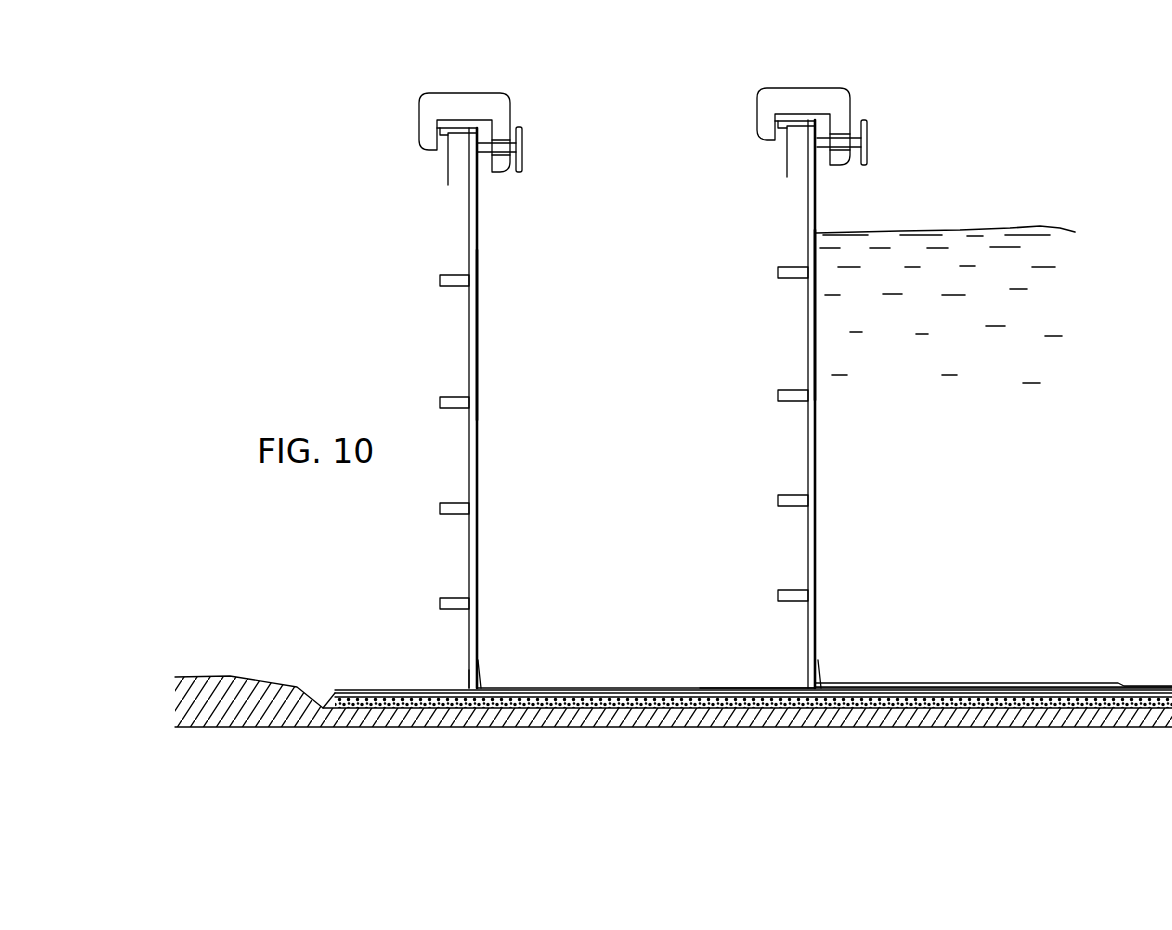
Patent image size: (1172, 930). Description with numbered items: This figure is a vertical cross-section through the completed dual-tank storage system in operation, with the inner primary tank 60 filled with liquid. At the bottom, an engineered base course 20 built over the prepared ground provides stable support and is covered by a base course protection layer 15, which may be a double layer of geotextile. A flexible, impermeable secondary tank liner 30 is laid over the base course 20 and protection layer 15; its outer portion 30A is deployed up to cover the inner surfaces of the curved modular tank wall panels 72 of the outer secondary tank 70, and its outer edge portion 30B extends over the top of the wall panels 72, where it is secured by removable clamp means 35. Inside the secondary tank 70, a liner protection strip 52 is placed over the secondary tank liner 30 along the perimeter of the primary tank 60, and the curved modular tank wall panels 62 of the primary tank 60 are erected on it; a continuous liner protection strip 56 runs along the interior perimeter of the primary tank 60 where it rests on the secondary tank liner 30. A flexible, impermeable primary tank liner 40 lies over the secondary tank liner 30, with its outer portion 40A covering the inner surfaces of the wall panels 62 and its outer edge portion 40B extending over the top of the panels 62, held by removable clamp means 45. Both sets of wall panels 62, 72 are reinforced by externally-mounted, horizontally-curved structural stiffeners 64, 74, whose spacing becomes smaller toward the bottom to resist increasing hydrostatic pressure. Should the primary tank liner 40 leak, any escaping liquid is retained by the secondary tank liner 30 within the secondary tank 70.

The base course protection layer 15 is at (388, 698).
The engineered base course 20 is at (352, 703).
The secondary tank liner 30 is at (594, 689).
The outer portion of secondary tank liner 30A is at (480, 298).
The outer edge portion of secondary tank liner 30B is at (447, 170).
The removable clamp means 35 is at (430, 108).
The primary tank liner 40 is at (988, 684).
The outer portion of primary tank liner 40A is at (816, 185).
The outer edge portion of primary tank liner 40B is at (786, 168).
The removable clamp means 45 is at (770, 100).
The liner protection strip 52 is at (772, 688).
The continuous liner protection strip 56 is at (482, 680).
The primary tank 60 is at (785, 68).
The curved modular tank wall panels 62 is at (800, 212).
The horizontally-curved structural stiffeners 64 is at (778, 390).
The secondary tank 70 is at (433, 66).
The curved modular tank wall panels 72 is at (462, 225).
The horizontally-curved structural stiffeners 74 is at (440, 397).